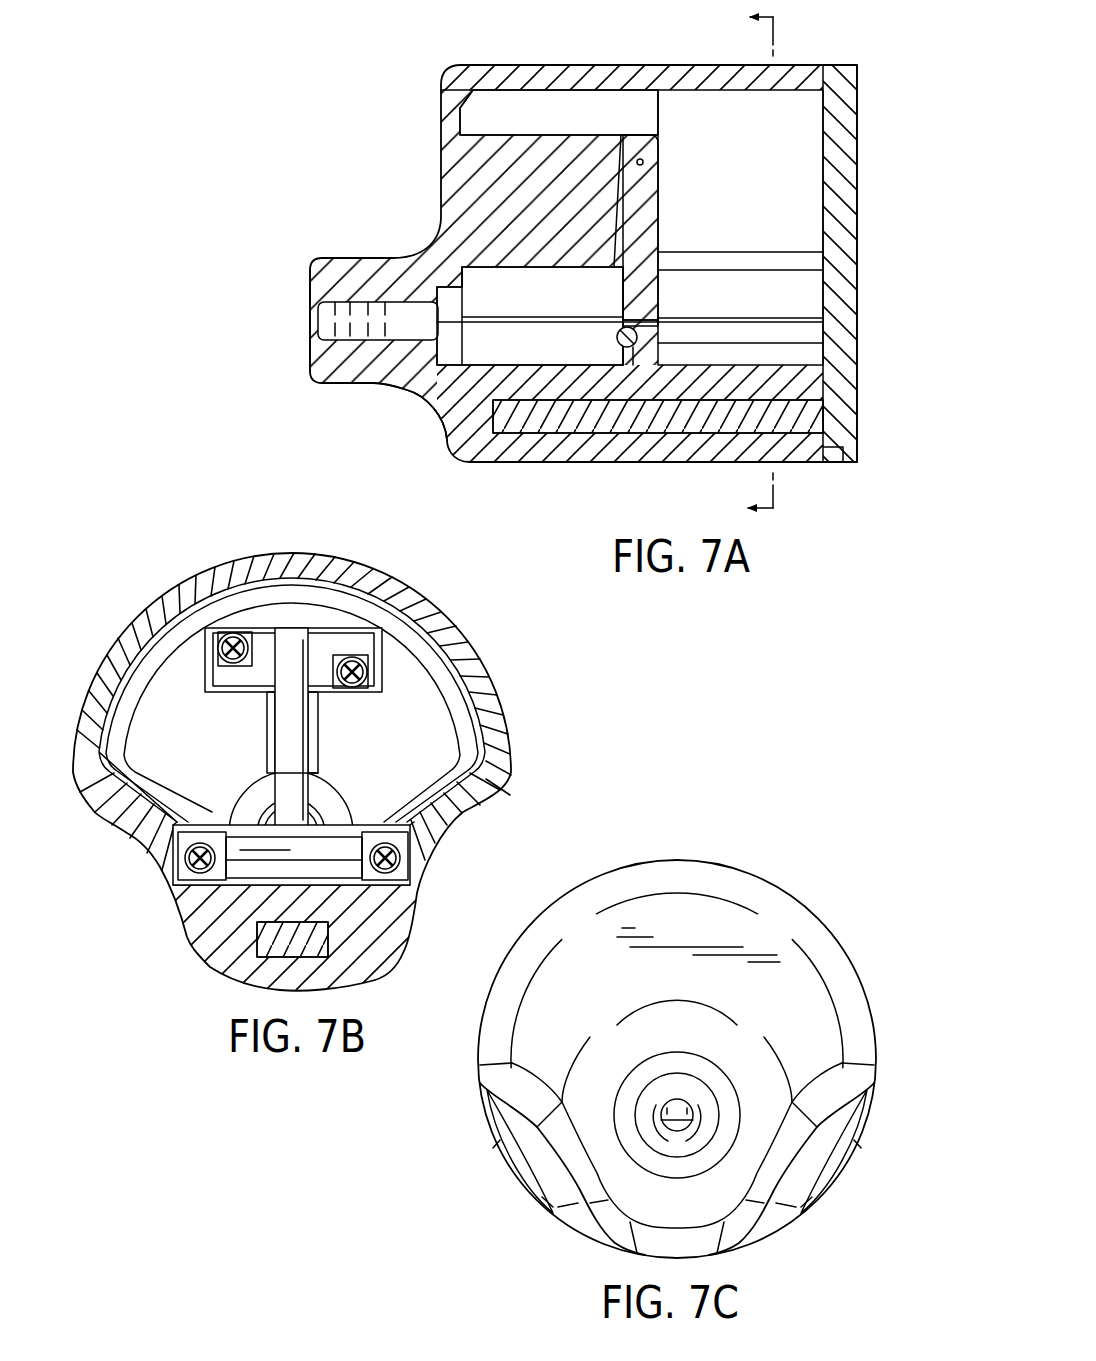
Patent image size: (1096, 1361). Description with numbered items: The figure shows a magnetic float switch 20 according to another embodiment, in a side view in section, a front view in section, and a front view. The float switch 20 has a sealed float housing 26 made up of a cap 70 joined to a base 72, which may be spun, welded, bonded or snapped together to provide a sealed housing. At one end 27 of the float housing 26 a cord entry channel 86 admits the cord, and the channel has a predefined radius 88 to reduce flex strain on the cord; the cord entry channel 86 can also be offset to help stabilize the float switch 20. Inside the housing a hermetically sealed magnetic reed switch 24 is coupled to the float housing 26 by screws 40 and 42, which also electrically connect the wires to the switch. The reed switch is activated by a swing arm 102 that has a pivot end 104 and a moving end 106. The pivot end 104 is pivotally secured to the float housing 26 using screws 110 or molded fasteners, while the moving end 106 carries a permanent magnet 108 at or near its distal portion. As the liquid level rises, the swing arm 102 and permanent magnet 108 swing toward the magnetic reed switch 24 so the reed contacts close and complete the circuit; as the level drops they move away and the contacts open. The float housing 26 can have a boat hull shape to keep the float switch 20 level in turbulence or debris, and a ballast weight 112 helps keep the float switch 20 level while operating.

In FIG. 7A, the float switch 20 is at (573, 269).
In FIG. 7B, the magnetic reed switch 24 is at (330, 946).
In FIG. 7A, the float housing 26 is at (806, 64).
In FIG. 7B, the float housing 26 is at (334, 554).
In FIG. 7C, the float housing 26 is at (767, 881).
In FIG. 7A, the end 27 is at (361, 385).
In FIG. 7B, the screw 40 is at (182, 905).
In FIG. 7B, the screw 42 is at (373, 873).
In FIG. 7A, the cap 70 is at (851, 210).
In FIG. 7A, the base 72 is at (553, 64).
In FIG. 7A, the cord entry channel 86 is at (357, 317).
In FIG. 7A, the predefined radius 88 is at (310, 313).
In FIG. 7A, the swing arm 102 is at (680, 148).
In FIG. 7B, the swing arm 102 is at (340, 740).
In FIG. 7A, the pivot end 104 is at (640, 143).
In FIG. 7B, the pivot end 104 is at (290, 650).
In FIG. 7A, the moving end 106 is at (650, 293).
In FIG. 7B, the moving end 106 is at (287, 787).
In FIG. 7A, the permanent magnet 108 is at (640, 322).
In FIG. 7B, the permanent magnet 108 is at (142, 834).
In FIG. 7B, the screws 110 is at (221, 644).
In FIG. 7A, the ballast weight 112 is at (608, 425).
In FIG. 7B, the ballast weight 112 is at (326, 849).